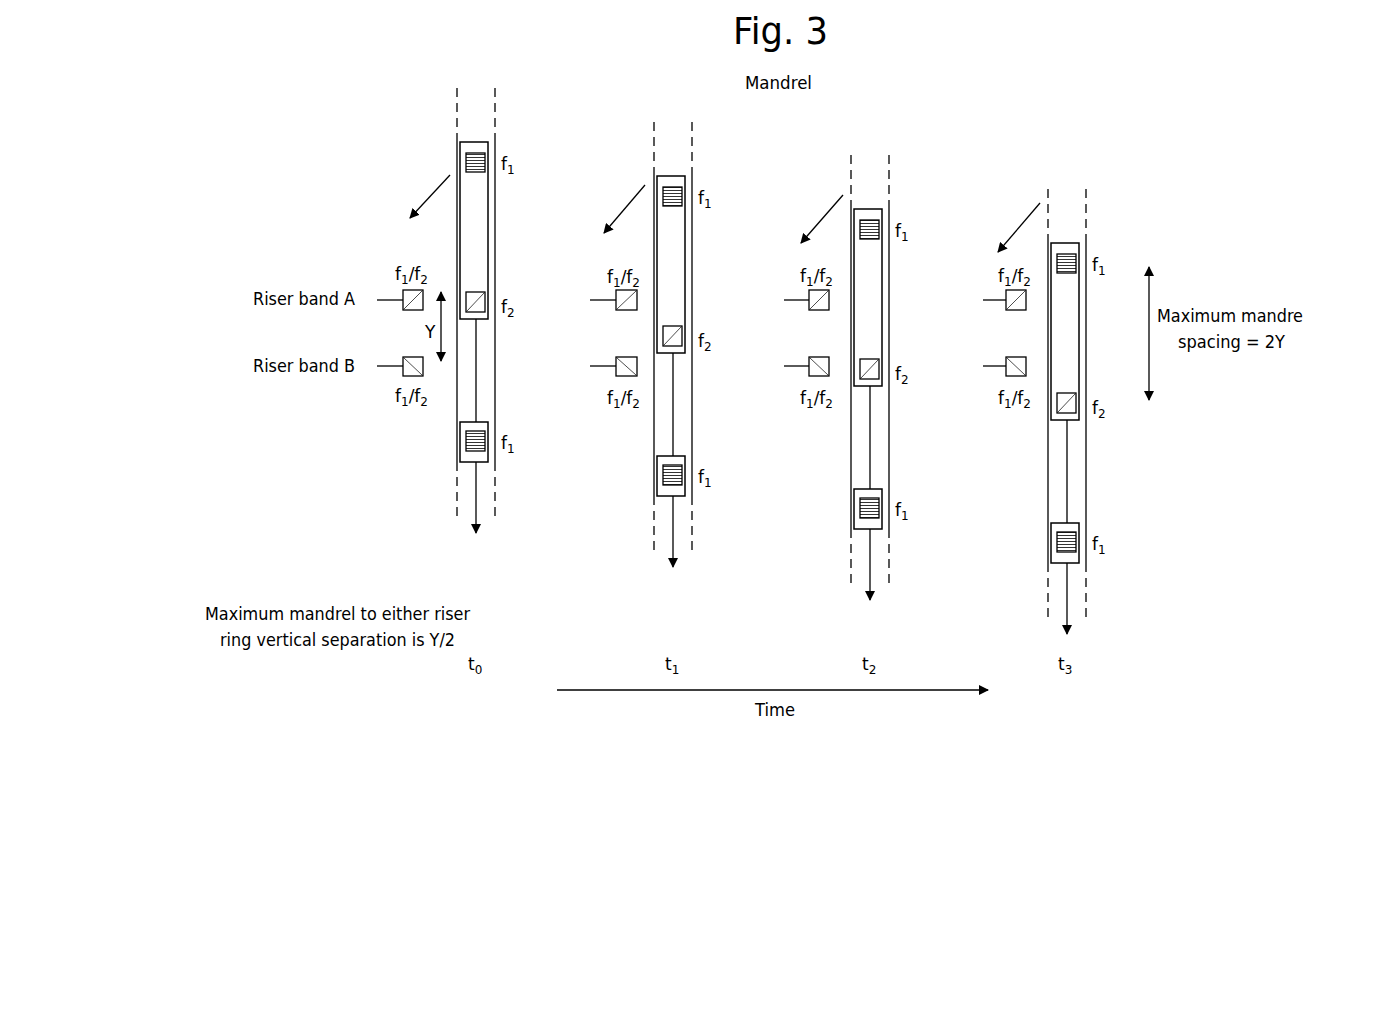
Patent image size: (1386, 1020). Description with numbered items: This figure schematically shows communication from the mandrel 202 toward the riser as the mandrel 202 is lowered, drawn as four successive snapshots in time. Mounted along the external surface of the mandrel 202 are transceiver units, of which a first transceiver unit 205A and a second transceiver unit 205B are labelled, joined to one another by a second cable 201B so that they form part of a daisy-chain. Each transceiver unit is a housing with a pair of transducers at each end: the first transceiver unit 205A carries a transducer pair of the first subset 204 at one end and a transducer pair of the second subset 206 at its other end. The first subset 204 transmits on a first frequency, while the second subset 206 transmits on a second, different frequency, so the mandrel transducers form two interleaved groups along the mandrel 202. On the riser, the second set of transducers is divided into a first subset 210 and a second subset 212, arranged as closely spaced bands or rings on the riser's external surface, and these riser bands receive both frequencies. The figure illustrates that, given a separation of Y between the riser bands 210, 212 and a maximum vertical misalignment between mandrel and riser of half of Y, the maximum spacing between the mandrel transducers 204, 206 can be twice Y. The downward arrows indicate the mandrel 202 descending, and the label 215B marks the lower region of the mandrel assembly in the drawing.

The mandrel 202 is at (457, 106).
The first subset of mandrel transducers 204 is at (466, 156).
The first transceiver unit 205A is at (478, 205).
The second transceiver unit 205B is at (688, 459).
The second subset of mandrel transducers 206 is at (480, 290).
The second cable 201B is at (478, 350).
The first subset of riser transducers 210 is at (403, 298).
The second subset of riser transducers 212 is at (403, 377).
The mandrel lower end / travel direction 215B is at (462, 452).